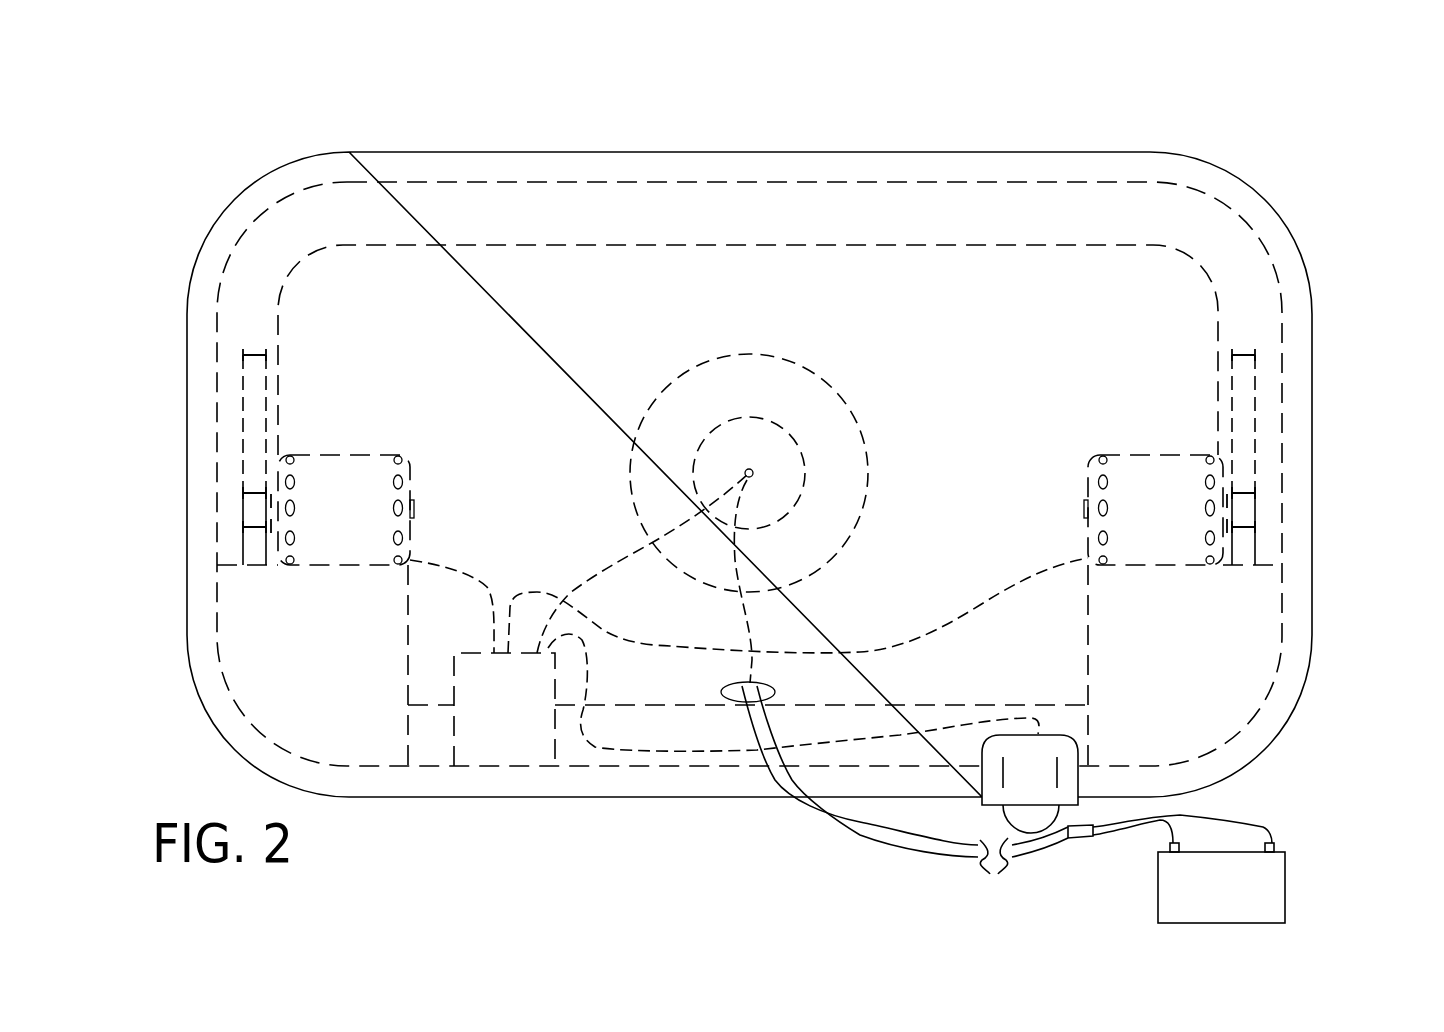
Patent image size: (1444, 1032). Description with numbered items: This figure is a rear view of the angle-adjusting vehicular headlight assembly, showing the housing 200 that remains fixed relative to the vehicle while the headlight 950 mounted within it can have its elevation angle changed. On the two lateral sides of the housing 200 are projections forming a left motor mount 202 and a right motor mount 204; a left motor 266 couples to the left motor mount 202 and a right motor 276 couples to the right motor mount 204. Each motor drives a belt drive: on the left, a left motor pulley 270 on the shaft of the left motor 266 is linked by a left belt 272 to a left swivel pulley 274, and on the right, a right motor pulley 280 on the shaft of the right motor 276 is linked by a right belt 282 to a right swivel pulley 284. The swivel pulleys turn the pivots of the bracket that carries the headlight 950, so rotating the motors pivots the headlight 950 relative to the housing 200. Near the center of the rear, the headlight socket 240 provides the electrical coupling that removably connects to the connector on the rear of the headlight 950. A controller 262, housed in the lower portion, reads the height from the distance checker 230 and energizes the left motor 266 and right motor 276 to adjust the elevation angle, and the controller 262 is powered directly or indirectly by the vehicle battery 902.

The housing 200 is at (1069, 152).
The left motor mount 202 is at (302, 677).
The right motor mount 204 is at (1235, 653).
The headlight 950 is at (928, 265).
The headlight socket 240 is at (745, 418).
The controller 262 is at (506, 742).
The left motor 266 is at (315, 555).
The right motor 276 is at (1185, 557).
The left motor pulley 270 is at (255, 512).
The left belt 272 is at (255, 410).
The left swivel pulley 274 is at (243, 355).
The right motor pulley 280 is at (1243, 513).
The right belt 282 is at (1242, 447).
The right swivel pulley 284 is at (1255, 352).
The distance checker 230 is at (993, 790).
The vehicle battery 902 is at (1255, 910).